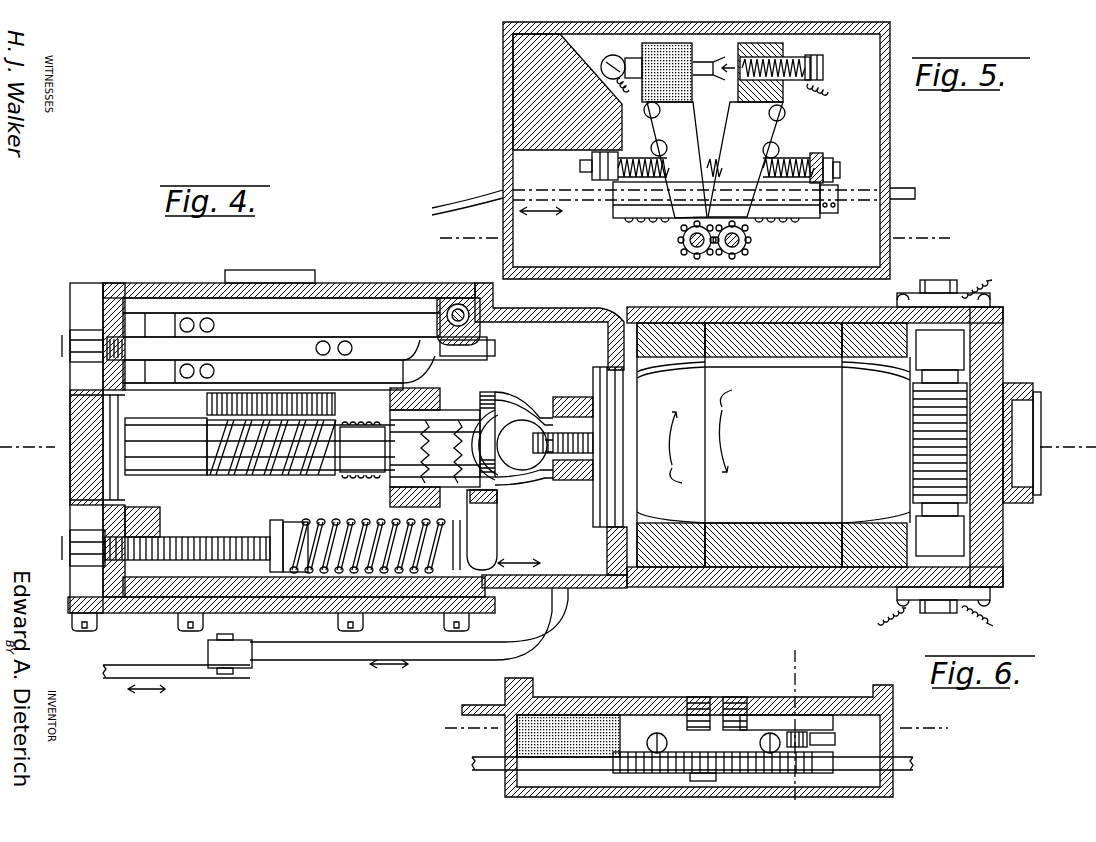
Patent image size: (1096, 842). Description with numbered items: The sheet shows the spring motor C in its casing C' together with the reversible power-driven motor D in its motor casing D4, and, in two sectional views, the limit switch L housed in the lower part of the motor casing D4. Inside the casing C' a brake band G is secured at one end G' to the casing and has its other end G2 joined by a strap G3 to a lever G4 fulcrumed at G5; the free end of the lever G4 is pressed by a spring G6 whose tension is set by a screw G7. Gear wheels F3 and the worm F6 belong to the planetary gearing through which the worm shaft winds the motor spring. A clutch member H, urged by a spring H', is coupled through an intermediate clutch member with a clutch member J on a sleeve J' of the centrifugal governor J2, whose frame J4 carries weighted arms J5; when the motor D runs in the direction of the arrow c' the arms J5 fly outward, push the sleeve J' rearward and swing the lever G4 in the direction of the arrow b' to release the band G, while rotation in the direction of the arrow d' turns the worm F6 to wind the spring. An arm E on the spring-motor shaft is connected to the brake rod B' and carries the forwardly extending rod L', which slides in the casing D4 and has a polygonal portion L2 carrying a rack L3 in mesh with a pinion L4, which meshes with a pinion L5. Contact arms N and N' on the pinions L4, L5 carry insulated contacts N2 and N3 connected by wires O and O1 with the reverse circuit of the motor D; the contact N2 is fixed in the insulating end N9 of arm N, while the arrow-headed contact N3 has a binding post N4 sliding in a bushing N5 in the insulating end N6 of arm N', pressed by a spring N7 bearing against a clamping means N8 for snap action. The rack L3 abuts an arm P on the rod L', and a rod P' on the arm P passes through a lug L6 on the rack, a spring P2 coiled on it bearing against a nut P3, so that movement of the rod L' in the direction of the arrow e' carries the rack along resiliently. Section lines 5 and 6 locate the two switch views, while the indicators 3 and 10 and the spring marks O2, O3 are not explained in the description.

In FIG. 4, the spring motor C is at (313, 457).
In FIG. 4, the casing C' is at (242, 268).
In FIG. 4, the brake band G is at (297, 340).
In FIG. 4, the brake band end G' is at (281, 344).
In FIG. 4, the brake band end G2 is at (360, 346).
In FIG. 4, the strap G3 is at (493, 348).
In FIG. 4, the lever G4 is at (493, 520).
In FIG. 4, the fulcrum G5 is at (458, 300).
In FIG. 4, the spring G6 is at (350, 522).
In FIG. 4, the screw G7 is at (240, 537).
In FIG. 4, the gear wheels F3 is at (207, 400).
In FIG. 4, the worm F6 is at (237, 476).
In FIG. 4, the clutch member H is at (435, 436).
In FIG. 4, the spring H' is at (362, 462).
In FIG. 4, the clutch member J is at (481, 424).
In FIG. 4, the sleeve J' is at (509, 428).
In FIG. 4, the centrifugal governor J2 is at (524, 425).
In FIG. 4, the frame J4 is at (575, 405).
In FIG. 4, the weighted arms J5 is at (538, 478).
In FIG. 4, the arrow b' is at (519, 555).
In FIG. 4, the rod L' is at (411, 624).
In FIG. 5, the rod L' is at (673, 187).
In FIG. 6, the rod L' is at (695, 780).
In FIG. 4, the arm E is at (208, 657).
In FIG. 4, the brake rod B' is at (176, 683).
In FIG. 4, the arrow e' is at (268, 681).
In FIG. 5, the arrow e' is at (541, 217).
In FIG. 4, the motor casing D4 is at (745, 588).
In FIG. 5, the motor casing D4 is at (711, 150).
In FIG. 6, the motor casing D4 is at (845, 705).
In FIG. 4, the power-driven motor D is at (802, 445).
In FIG. 4, the arrow d' is at (678, 447).
In FIG. 4, the arrow c' is at (728, 431).
In FIG. 4, the wire O is at (985, 623).
In FIG. 5, the wire O is at (618, 90).
In FIG. 5, the wire O1 is at (830, 92).
In FIG. 4, the spring O2 is at (897, 624).
In FIG. 4, the spring O3 is at (988, 281).
In FIG. 4, the section line 3 is at (1085, 445).
In FIG. 6, the section line 5 is at (697, 728).
In FIG. 5, the section line 6 is at (695, 238).
In FIG. 6, the section line 10 is at (797, 716).
In FIG. 5, the contact arm N is at (677, 160).
In FIG. 6, the contact arm N is at (704, 699).
In FIG. 5, the contact arm N' is at (745, 159).
In FIG. 6, the contact arm N' is at (786, 712).
In FIG. 5, the insulated contact N2 is at (700, 62).
In FIG. 5, the insulated contact N3 is at (722, 78).
In FIG. 5, the binding post N4 is at (788, 82).
In FIG. 6, the binding post N4 is at (795, 732).
In FIG. 5, the bushing N5 is at (785, 56).
In FIG. 5, the arm end N6 is at (760, 130).
In FIG. 5, the spring N7 is at (804, 85).
In FIG. 6, the spring N7 is at (808, 730).
In FIG. 5, the clamping means N8 is at (823, 62).
In FIG. 6, the clamping means N8 is at (825, 738).
In FIG. 5, the arm end N9 is at (665, 96).
In FIG. 5, the arm P is at (799, 152).
In FIG. 5, the rod P' is at (844, 168).
In FIG. 5, the spring P2 is at (637, 158).
In FIG. 5, the nut P3 is at (592, 158).
In FIG. 6, the limit switch L is at (684, 742).
In FIG. 5, the polygonal portion L2 is at (585, 200).
In FIG. 6, the polygonal portion L2 is at (560, 766).
In FIG. 5, the rack L3 is at (800, 216).
In FIG. 5, the pinion L4 is at (685, 240).
In FIG. 6, the pinion L4 is at (690, 700).
In FIG. 5, the pinion L5 is at (747, 240).
In FIG. 6, the pinion L5 is at (752, 700).
In FIG. 5, the lug L6 is at (812, 153).